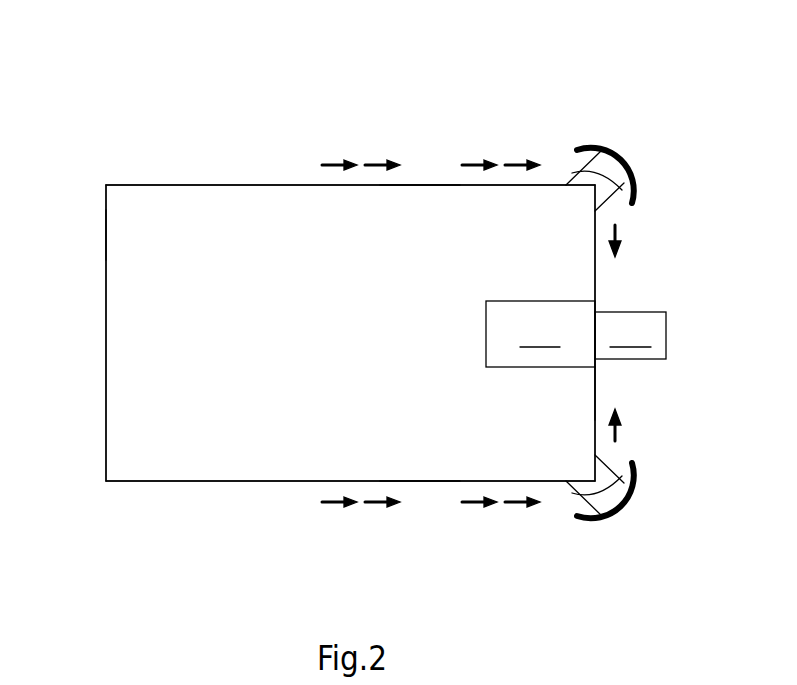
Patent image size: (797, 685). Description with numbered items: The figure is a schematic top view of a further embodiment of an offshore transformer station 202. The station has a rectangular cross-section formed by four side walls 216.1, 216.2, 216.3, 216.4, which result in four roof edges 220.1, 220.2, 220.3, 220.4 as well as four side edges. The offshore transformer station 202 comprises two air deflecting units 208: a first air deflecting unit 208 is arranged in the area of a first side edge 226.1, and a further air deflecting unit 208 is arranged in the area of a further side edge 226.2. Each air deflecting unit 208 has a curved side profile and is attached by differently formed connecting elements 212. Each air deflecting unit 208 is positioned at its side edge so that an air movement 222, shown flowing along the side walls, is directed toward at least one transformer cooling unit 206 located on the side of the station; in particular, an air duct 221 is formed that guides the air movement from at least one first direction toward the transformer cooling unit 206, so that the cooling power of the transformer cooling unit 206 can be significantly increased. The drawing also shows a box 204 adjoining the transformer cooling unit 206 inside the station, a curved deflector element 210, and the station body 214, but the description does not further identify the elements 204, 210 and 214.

The offshore transformer station 202 is at (72, 80).
The first component 204 is at (540, 334).
The transformer cooling unit 206 is at (630, 335).
The air deflecting unit 208 is at (686, 161).
The curved deflector 210 is at (612, 158).
The connecting element 212 is at (572, 173).
The housing 214 is at (172, 423).
The side wall 216.1 is at (106, 342).
The side wall 216.2 is at (245, 185).
The side wall 216.3 is at (597, 265).
The side wall 216.4 is at (292, 481).
The roof edge 220.1 is at (106, 232).
The roof edge 220.2 is at (418, 185).
The roof edge 220.3 is at (597, 385).
The roof edge 220.4 is at (420, 482).
The air duct 221 is at (603, 142).
The air movement 222 is at (370, 165).
The first side edge 226.1 is at (600, 483).
The further side edge 226.2 is at (600, 183).